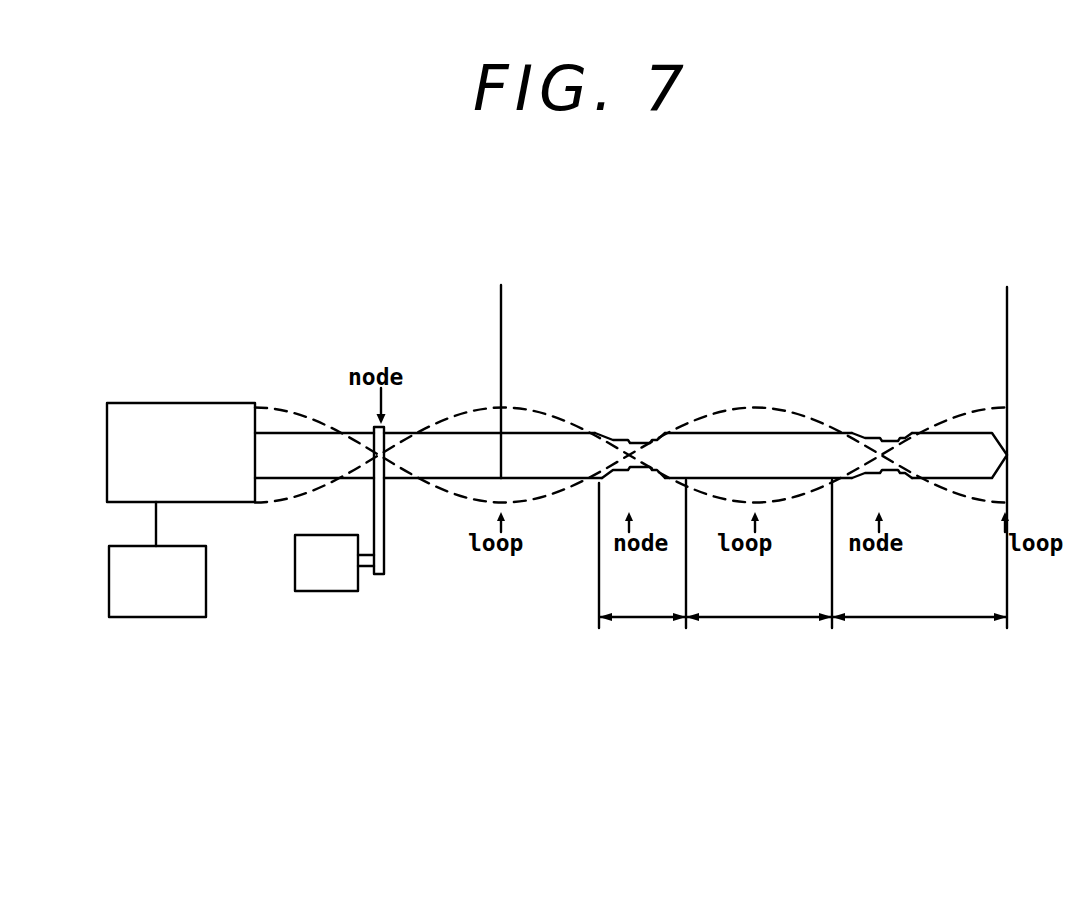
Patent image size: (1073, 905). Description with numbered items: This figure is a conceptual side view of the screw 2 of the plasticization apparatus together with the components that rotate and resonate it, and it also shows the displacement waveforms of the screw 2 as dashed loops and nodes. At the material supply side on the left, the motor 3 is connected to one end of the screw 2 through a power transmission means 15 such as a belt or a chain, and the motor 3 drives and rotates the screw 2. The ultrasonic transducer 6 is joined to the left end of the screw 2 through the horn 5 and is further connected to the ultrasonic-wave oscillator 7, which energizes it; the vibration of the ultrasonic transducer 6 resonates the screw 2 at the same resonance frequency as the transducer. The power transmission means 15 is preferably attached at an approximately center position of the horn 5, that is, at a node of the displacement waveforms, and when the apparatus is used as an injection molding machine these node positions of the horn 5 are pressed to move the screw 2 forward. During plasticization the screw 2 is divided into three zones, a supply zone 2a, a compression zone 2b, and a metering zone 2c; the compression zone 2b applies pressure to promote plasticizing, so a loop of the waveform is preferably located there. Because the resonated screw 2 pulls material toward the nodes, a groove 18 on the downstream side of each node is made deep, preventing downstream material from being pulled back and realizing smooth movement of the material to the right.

The screw 2 is at (1027, 279).
The supply zone 2a is at (641, 619).
The compression zone 2b is at (762, 619).
The metering zone 2c is at (928, 619).
The motor 3 is at (325, 582).
The horn 5 is at (263, 340).
The ultrasonic transducer 6 is at (166, 420).
The ultrasonic-wave oscillator 7 is at (163, 603).
The power transmission means 15 is at (385, 535).
The groove 18 is at (634, 434).